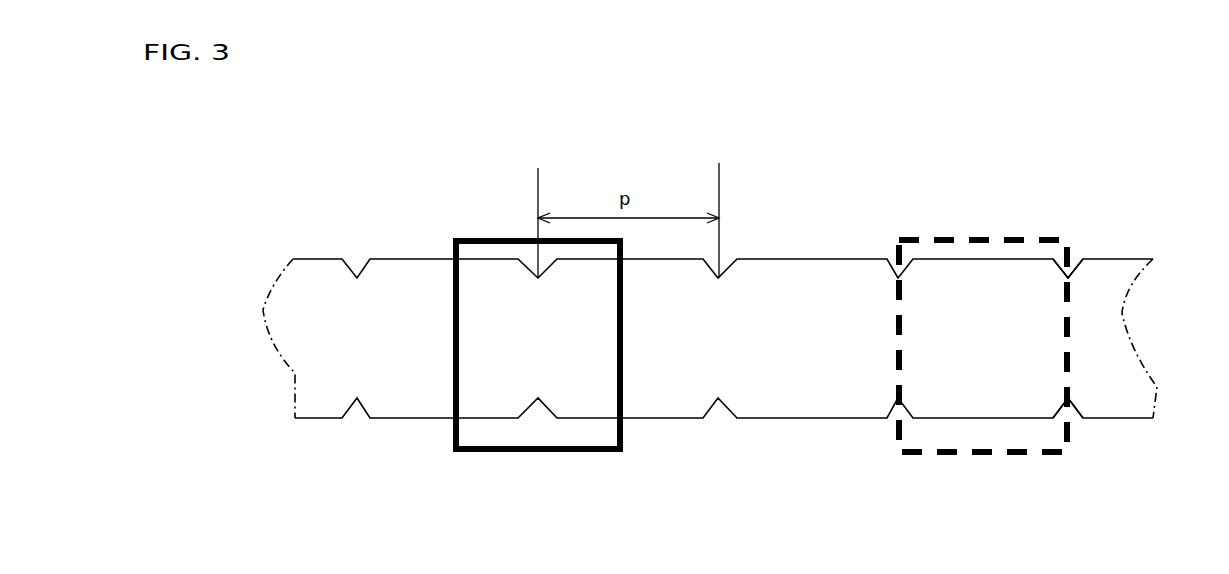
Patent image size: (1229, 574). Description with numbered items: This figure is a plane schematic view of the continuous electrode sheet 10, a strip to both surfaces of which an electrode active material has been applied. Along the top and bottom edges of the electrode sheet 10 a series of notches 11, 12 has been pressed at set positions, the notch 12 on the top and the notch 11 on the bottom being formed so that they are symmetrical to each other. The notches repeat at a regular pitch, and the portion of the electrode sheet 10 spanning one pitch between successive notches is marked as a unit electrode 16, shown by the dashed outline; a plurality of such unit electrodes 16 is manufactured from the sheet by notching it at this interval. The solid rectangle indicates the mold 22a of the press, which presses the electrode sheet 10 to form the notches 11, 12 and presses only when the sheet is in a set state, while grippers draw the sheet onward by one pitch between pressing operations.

The electrode sheet 10 is at (1149, 308).
The notch 11 is at (1067, 412).
The notch 12 is at (1068, 277).
The unit electrode 16 is at (983, 237).
The mold 22a is at (475, 235).